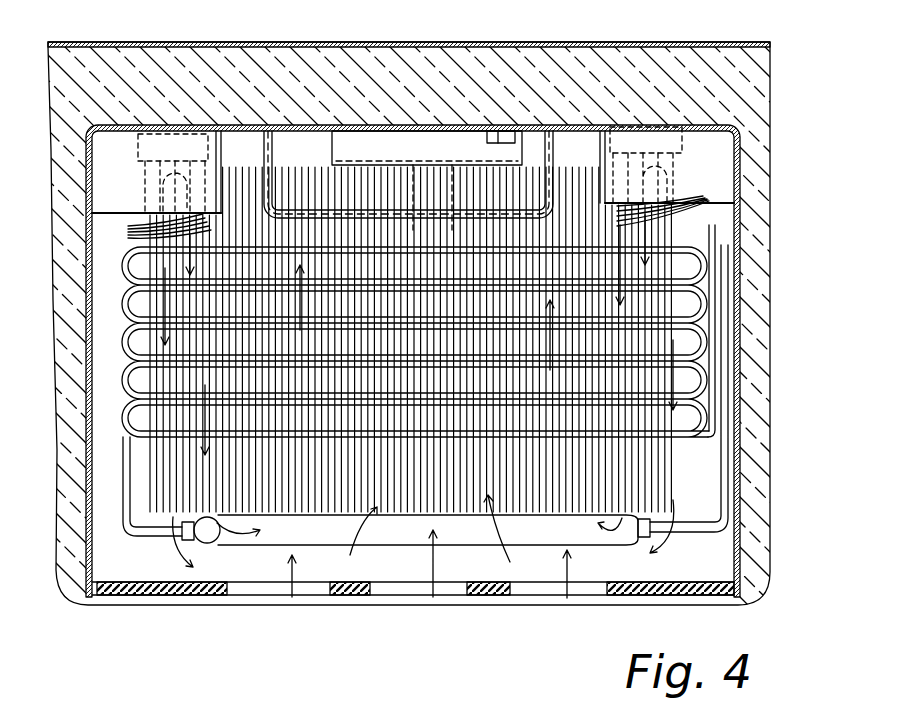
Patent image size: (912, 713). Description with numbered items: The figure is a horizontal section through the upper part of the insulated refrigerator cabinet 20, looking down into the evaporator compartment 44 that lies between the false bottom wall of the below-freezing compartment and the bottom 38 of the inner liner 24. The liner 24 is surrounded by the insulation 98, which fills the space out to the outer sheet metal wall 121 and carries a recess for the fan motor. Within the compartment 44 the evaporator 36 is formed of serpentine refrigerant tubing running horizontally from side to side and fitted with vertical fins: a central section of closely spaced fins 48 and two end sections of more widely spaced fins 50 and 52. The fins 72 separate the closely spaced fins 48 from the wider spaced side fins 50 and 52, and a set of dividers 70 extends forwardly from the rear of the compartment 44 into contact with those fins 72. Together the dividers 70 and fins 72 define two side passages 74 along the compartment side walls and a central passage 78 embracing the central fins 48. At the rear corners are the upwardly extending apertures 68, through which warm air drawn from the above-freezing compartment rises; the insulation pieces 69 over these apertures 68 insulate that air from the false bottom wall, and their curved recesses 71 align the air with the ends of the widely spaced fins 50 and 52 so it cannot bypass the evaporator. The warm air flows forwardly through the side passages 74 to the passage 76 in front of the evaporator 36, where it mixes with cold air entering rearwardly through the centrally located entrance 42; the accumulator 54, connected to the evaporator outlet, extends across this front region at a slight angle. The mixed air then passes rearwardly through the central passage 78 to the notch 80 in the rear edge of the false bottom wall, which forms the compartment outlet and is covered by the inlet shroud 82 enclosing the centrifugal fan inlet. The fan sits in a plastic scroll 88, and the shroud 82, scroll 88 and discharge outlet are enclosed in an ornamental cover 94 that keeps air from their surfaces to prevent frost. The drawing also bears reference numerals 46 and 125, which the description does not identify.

The refrigerator cabinet 20 is at (740, 42).
The inner liner 24 is at (740, 152).
The evaporator 36 is at (122, 316).
The bottom 38 is at (717, 557).
The entrance 42 is at (313, 595).
The evaporator compartment 44 is at (97, 213).
The evaporator coil tubes 46 is at (125, 400).
The closely spaced fins 48 is at (315, 172).
The end section of widely spaced fins 50 is at (154, 229).
The end section of widely spaced fins 52 is at (668, 198).
The accumulator 54 is at (255, 545).
The apertures 68 is at (140, 157).
The insulation pieces 69 is at (113, 207).
The dividers 70 is at (221, 148).
The curved recesses 71 is at (137, 160).
The fins 72 is at (227, 488).
The side passages 74 is at (100, 458).
The passage 76 is at (416, 545).
The central passage 78 is at (580, 185).
The notch 80 is at (353, 143).
The inlet shroud 82 is at (452, 165).
The scroll 88 is at (378, 167).
The ornamental cover 94 is at (413, 167).
The insulation 98 is at (118, 78).
The outer sheet metal wall 121 is at (72, 42).
The mounting bracket 125 is at (503, 131).